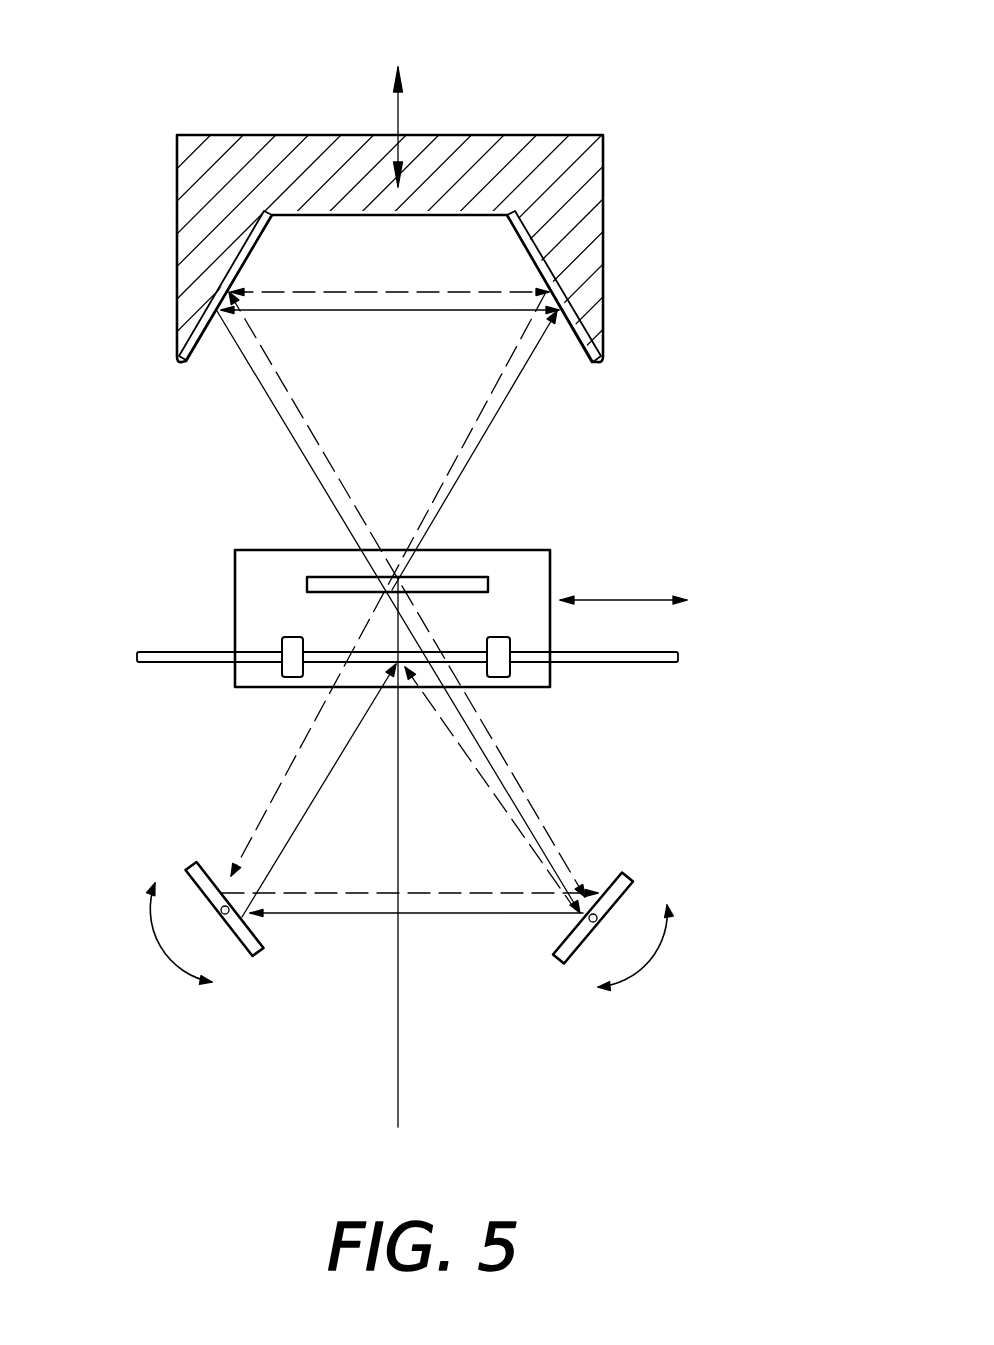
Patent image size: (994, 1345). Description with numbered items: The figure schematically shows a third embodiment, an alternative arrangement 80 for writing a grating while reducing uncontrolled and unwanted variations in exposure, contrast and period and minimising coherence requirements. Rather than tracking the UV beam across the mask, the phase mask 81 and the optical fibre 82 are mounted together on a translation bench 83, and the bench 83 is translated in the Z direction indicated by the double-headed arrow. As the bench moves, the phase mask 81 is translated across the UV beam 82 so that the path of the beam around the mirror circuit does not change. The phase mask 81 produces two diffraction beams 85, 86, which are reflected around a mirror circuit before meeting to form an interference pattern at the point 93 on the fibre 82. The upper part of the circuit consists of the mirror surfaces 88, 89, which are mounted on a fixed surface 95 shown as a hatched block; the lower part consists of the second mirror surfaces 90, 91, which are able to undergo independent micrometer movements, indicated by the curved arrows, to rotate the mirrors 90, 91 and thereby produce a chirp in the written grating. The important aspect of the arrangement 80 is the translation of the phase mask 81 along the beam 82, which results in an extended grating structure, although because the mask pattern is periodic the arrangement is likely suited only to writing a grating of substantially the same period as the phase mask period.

The arrangement 80 is at (706, 131).
The fixed surface 95 is at (598, 228).
The mirror surface 88 is at (583, 360).
The mirror surface 89 is at (194, 350).
The diffraction beam 85 is at (487, 433).
The diffraction beam 86 is at (300, 412).
The phase mask 81 is at (450, 577).
The translation bench 83 is at (552, 563).
The optical fibre 82 is at (160, 657).
The point 93 is at (410, 696).
The second mirror surface 90 is at (265, 932).
The second mirror surface 91 is at (558, 940).